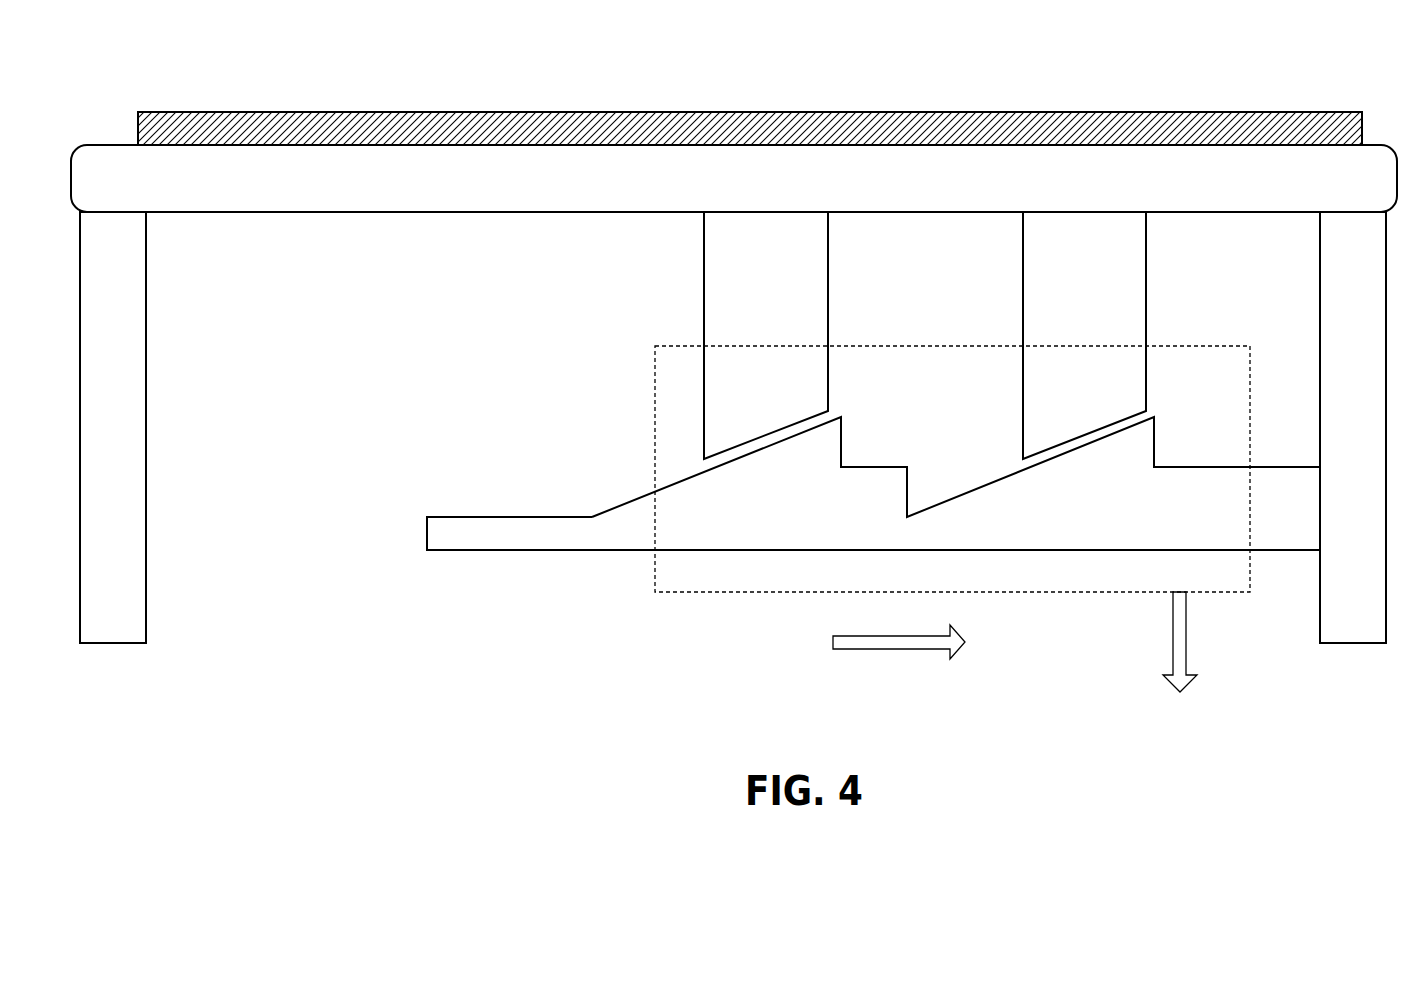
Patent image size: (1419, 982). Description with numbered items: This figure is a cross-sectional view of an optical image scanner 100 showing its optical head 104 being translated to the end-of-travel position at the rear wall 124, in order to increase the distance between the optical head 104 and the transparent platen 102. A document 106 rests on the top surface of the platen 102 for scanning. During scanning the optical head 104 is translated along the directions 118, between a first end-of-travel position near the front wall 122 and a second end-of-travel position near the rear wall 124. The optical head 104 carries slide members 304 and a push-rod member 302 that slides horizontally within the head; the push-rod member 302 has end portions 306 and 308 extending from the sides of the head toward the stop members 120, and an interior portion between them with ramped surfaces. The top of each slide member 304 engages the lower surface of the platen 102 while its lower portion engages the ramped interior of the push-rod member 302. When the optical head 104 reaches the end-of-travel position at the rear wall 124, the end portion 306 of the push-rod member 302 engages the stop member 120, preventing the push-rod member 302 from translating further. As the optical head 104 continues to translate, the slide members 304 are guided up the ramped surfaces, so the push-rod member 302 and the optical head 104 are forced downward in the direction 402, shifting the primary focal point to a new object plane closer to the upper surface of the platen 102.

The optical image scanner 100 is at (1284, 81).
The transparent platen 102 is at (244, 212).
The optical head 104 is at (714, 592).
The document 106 is at (1098, 112).
The translation directions 118 is at (883, 649).
The stop member 120 is at (146, 430).
The front wall 122 is at (113, 689).
The rear wall 124 is at (1343, 675).
The push-rod member 302 is at (565, 476).
The slide member 304 is at (704, 260).
The end portion 306 is at (1285, 550).
The end portion 308 is at (476, 550).
The downward direction 402 is at (1173, 642).